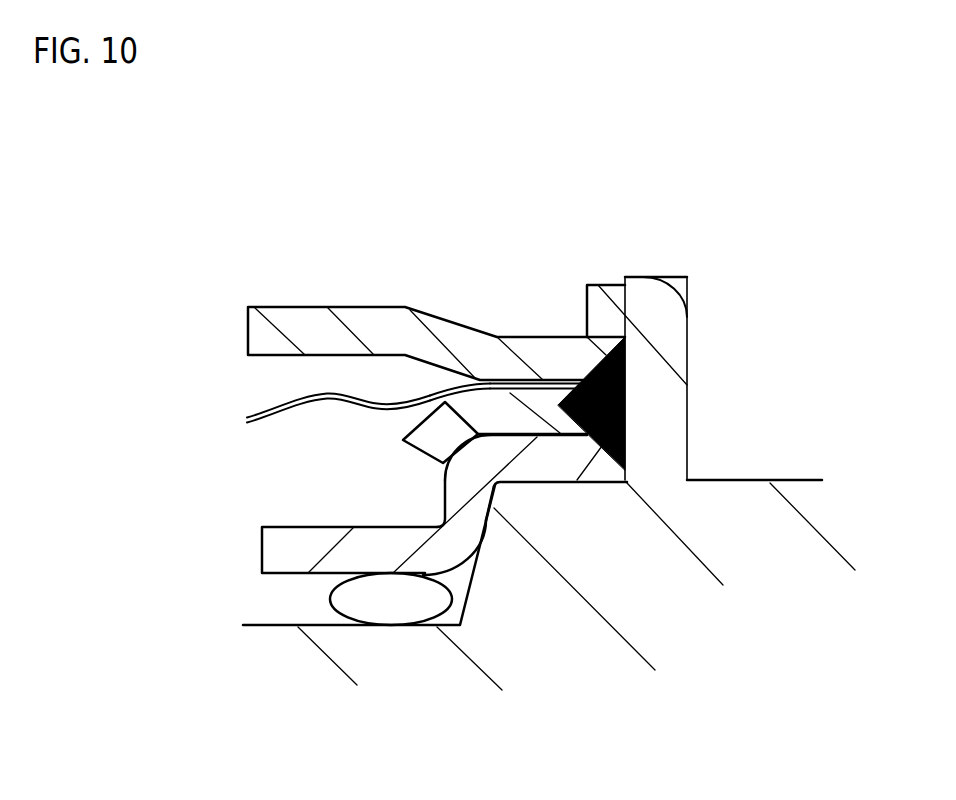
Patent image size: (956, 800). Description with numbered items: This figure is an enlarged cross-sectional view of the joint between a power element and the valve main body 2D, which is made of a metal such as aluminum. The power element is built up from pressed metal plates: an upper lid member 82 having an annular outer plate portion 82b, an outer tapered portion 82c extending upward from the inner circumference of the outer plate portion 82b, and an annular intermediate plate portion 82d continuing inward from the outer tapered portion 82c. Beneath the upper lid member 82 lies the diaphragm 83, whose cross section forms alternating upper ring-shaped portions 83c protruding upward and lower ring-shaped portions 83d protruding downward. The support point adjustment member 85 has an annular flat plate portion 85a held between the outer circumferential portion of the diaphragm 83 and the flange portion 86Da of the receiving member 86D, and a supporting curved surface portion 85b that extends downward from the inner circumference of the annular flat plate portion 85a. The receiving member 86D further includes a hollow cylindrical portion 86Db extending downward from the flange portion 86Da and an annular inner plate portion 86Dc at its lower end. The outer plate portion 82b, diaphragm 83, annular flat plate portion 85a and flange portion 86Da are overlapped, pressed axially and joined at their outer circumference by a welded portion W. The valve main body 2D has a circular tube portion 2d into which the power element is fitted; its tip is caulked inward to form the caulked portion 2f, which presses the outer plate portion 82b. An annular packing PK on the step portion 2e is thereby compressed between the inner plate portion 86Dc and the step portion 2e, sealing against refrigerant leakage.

The upper lid member 82 is at (383, 274).
The intermediate plate portion 82d is at (300, 318).
The outer tapered portion 82c is at (427, 316).
The outer plate portion 82b is at (537, 335).
The caulked portion 2f is at (598, 285).
The valve main body 2D is at (580, 483).
The circular tube portion 2d is at (688, 383).
The step portion 2e is at (308, 623).
The welded portion W is at (628, 388).
The diaphragm 83 is at (340, 331).
The upper ring-shaped portion 83c is at (324, 396).
The lower ring-shaped portion 83d is at (410, 400).
The annular flat plate portion 85a is at (545, 395).
The support point adjustment member 85 is at (517, 551).
The supporting curved surface portion 85b is at (403, 440).
The receiving member 86D is at (349, 589).
The hollow cylindrical portion 86Db is at (437, 488).
The inner plate portion 86Dc is at (390, 553).
The flange portion 86Da is at (543, 468).
The packing PK is at (370, 605).